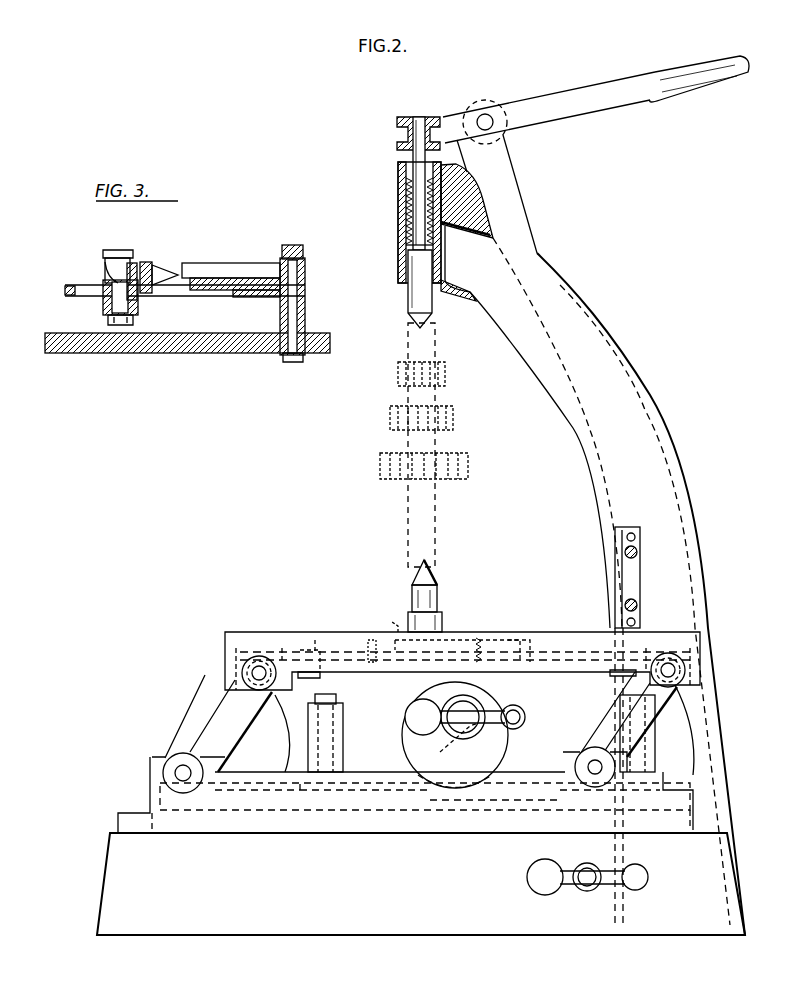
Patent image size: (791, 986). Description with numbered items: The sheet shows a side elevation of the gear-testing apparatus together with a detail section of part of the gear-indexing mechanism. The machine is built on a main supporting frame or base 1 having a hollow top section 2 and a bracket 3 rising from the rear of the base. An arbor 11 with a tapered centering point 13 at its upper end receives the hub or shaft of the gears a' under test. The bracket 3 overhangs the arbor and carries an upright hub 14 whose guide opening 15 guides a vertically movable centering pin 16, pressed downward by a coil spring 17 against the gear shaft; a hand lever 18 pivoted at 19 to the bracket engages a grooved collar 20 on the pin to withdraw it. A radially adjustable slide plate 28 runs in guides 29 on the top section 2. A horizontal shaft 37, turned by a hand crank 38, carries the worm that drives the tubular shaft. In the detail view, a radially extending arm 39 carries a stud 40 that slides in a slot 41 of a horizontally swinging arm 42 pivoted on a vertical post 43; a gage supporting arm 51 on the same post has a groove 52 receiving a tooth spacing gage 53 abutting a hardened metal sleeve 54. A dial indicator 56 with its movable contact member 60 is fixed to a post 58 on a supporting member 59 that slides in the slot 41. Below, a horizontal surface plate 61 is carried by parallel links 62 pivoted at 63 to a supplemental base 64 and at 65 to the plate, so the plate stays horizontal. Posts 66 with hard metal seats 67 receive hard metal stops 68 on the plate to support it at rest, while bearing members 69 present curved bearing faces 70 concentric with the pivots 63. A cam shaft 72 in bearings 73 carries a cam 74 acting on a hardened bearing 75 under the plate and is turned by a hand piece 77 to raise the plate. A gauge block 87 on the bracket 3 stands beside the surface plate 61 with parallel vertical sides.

In FIG. 2, the main supporting frame or base 1 is at (110, 877).
In FIG. 3, the main supporting frame or base 1 is at (155, 352).
In FIG. 2, the hollow top section 2 is at (372, 690).
In FIG. 2, the bracket 3 is at (653, 432).
In FIG. 2, the arbor 11 is at (445, 618).
In FIG. 2, the tapered centering point 13 is at (437, 584).
In FIG. 2, the upright hub 14 is at (398, 185).
In FIG. 2, the guide opening 15 is at (405, 222).
In FIG. 2, the centering pin 16 is at (408, 296).
In FIG. 2, the coil spring 17 is at (405, 242).
In FIG. 2, the hand lever 18 is at (556, 108).
In FIG. 2, the pivot 19 is at (485, 114).
In FIG. 2, the grooved collar 20 is at (397, 121).
In FIG. 2, the slide plate 28 is at (398, 625).
In FIG. 2, the guides 29 is at (480, 632).
In FIG. 2, the horizontal shaft 37 is at (587, 891).
In FIG. 2, the hand crank 38 is at (648, 877).
In FIG. 3, the radially extending arm 39 is at (135, 305).
In FIG. 3, the stud 40 is at (103, 302).
In FIG. 3, the slot 41 is at (172, 296).
In FIG. 3, the horizontally swinging arm 42 is at (65, 291).
In FIG. 3, the vertical post 43 is at (306, 310).
In FIG. 3, the gage supporting arm 51 is at (220, 264).
In FIG. 3, the groove 52 is at (250, 291).
In FIG. 3, the tooth spacing gage 53 is at (252, 264).
In FIG. 3, the hardened metal sleeve 54 is at (305, 266).
In FIG. 3, the dial indicator 56 is at (106, 258).
In FIG. 3, the post 58 is at (138, 263).
In FIG. 3, the supporting member 59 is at (104, 272).
In FIG. 3, the movable contact member 60 is at (175, 270).
In FIG. 2, the horizontal surface plate 61 is at (540, 632).
In FIG. 2, the parallel links 62 is at (212, 712).
In FIG. 2, the pivots 63 is at (176, 773).
In FIG. 2, the supplemental base 64 is at (420, 808).
In FIG. 2, the pivots 65 is at (259, 666).
In FIG. 2, the posts 66 is at (310, 738).
In FIG. 2, the hard metal seats 67 is at (315, 700).
In FIG. 2, the hard metal stops 68 is at (311, 672).
In FIG. 2, the bearing members 69 is at (185, 728).
In FIG. 2, the curved bearing faces 70 is at (278, 752).
In FIG. 2, the cam shaft 72 is at (463, 726).
In FIG. 2, the bearings 73 is at (486, 740).
In FIG. 2, the cam 74 is at (422, 745).
In FIG. 2, the hardened bearing 75 is at (512, 636).
In FIG. 2, the hand piece 77 is at (524, 710).
In FIG. 2, the gauge block 87 is at (615, 562).
In FIG. 2, the gears under test a' is at (435, 420).